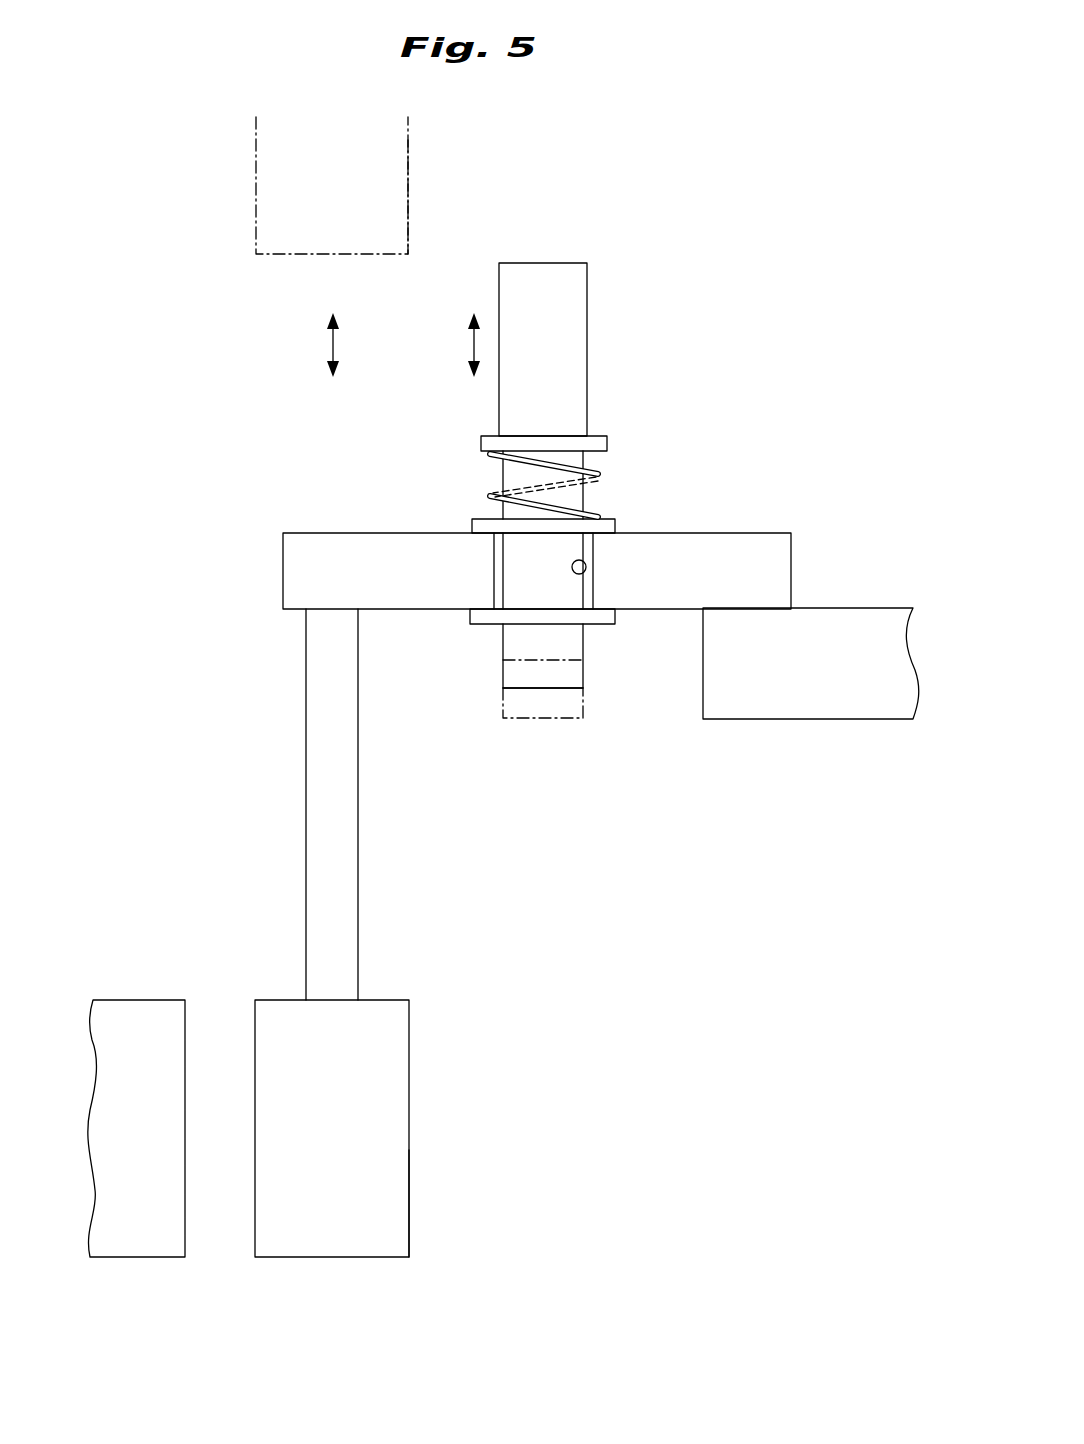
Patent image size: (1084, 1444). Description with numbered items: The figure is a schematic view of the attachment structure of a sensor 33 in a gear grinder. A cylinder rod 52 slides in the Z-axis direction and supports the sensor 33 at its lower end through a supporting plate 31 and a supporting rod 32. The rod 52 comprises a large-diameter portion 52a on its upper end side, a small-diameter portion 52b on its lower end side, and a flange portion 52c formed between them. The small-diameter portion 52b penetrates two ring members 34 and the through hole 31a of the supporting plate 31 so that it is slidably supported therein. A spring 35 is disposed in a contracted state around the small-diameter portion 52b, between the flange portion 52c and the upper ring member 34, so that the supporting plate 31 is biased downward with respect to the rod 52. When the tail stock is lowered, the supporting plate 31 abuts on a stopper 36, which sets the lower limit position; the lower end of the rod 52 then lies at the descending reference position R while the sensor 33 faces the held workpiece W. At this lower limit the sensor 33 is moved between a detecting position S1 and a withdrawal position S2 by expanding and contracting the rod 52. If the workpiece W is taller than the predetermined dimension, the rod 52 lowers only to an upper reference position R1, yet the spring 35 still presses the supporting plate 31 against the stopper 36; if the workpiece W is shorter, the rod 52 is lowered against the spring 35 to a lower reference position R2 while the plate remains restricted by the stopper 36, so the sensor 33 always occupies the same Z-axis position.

The supporting plate 31 is at (735, 533).
The through hole 31a is at (585, 575).
The supporting rod 32 is at (306, 718).
The sensor 33 is at (290, 255).
The ring member 34 is at (470, 523).
The spring 35 is at (490, 492).
The stopper 36 is at (833, 719).
The rod 52 is at (598, 430).
The large-diameter portion 52a is at (587, 330).
The small-diameter portion 52b is at (583, 662).
The flange portion 52c is at (600, 436).
The descending reference position R is at (527, 689).
The upper reference position R1 is at (540, 660).
The lower reference position R2 is at (527, 719).
The detecting position S1 is at (409, 1207).
The withdrawal position S2 is at (408, 152).
The workpiece W is at (147, 1257).